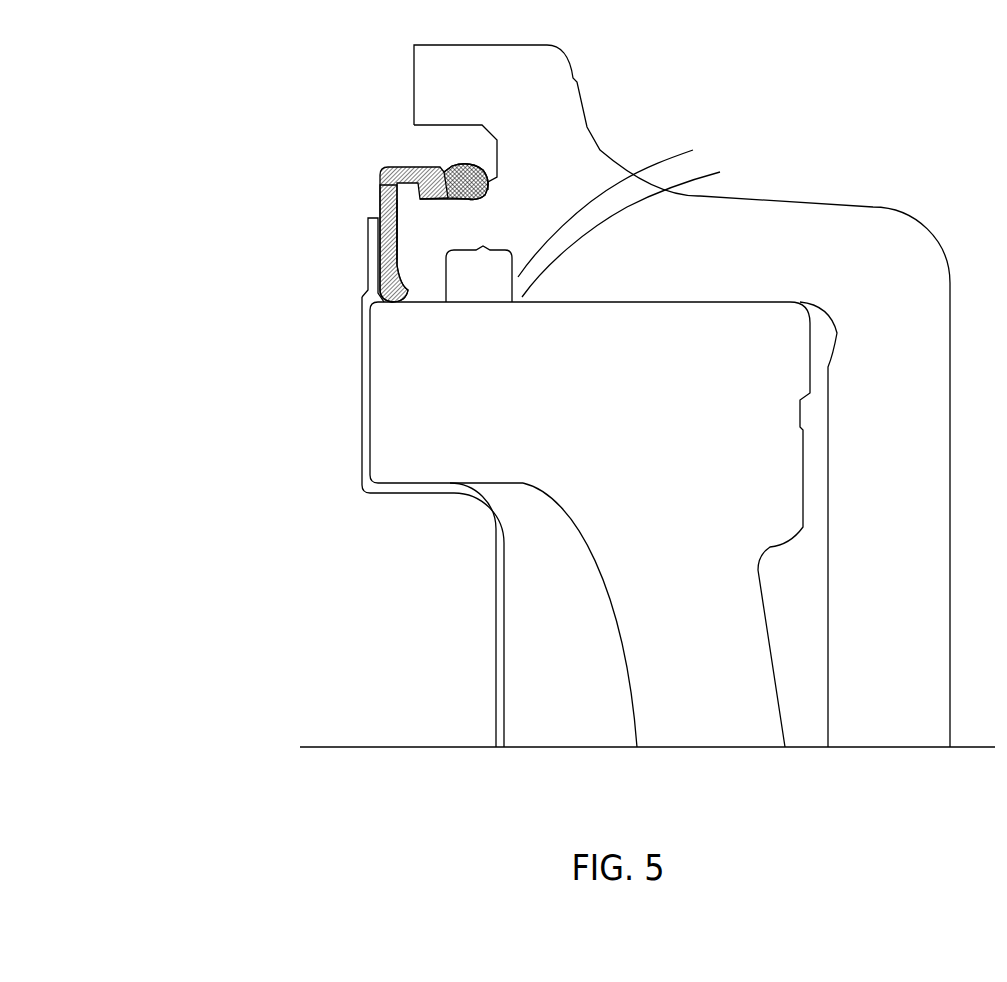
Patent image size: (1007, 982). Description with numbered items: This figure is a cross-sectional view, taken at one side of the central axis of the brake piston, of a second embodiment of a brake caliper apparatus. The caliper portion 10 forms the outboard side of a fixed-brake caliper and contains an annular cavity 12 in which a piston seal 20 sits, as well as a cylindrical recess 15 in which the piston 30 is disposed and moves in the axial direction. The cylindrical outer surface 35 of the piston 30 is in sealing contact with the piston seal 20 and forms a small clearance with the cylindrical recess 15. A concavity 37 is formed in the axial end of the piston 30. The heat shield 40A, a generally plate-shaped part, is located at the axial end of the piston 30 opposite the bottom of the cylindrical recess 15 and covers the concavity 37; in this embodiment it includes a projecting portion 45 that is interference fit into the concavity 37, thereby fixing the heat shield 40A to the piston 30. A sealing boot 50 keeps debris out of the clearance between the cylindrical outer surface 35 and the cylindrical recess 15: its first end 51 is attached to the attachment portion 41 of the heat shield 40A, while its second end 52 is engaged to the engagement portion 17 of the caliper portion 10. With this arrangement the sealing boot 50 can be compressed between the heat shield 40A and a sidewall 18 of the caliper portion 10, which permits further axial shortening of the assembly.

The caliper portion 10 is at (582, 182).
The annular cavity 12 is at (622, 205).
The cylindrical recess 15 is at (805, 575).
The engagement portion 17 is at (449, 196).
The sidewall 18 is at (400, 250).
The piston seal 20 is at (475, 283).
The piston 30 is at (616, 437).
The cylindrical outer surface 35 is at (641, 227).
The concavity 37 is at (630, 672).
The heat shield 40A is at (362, 353).
The attachment portion 41 is at (370, 233).
The projecting portion 45 is at (497, 662).
The sealing boot 50 is at (384, 174).
The first end 51 is at (380, 218).
The second end 52 is at (447, 178).